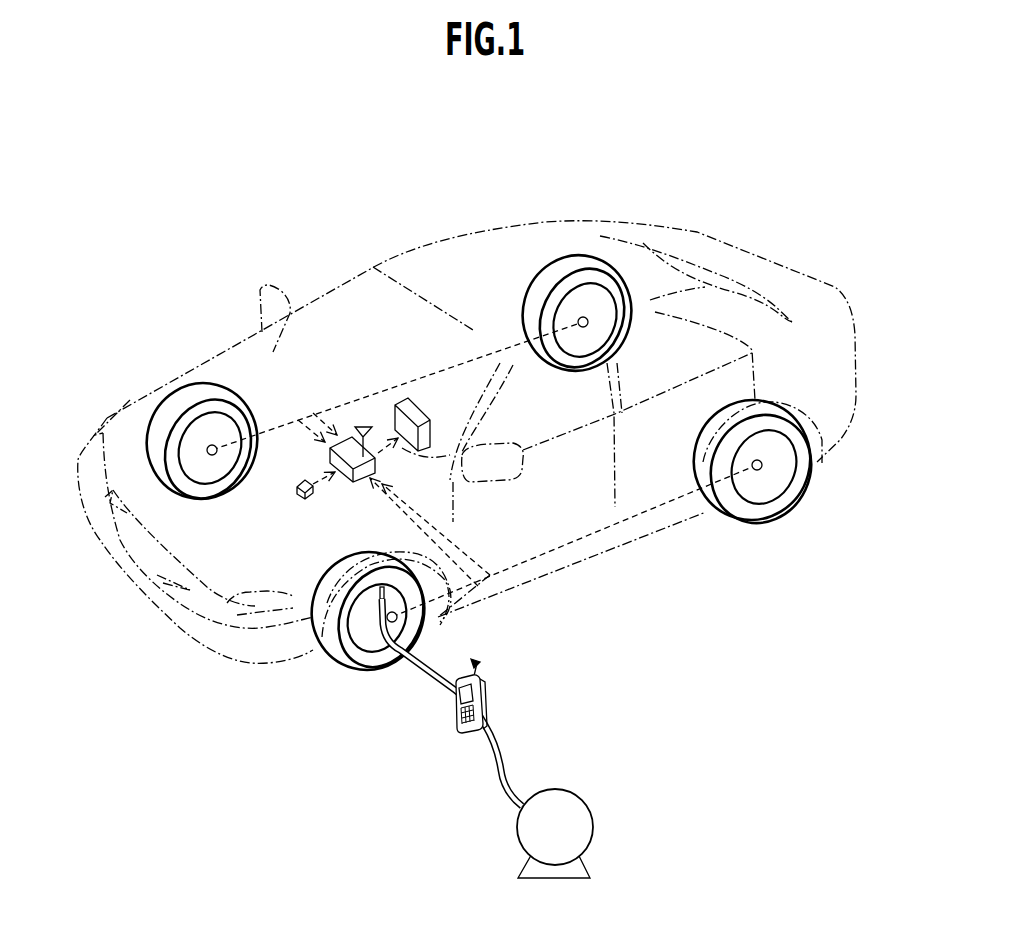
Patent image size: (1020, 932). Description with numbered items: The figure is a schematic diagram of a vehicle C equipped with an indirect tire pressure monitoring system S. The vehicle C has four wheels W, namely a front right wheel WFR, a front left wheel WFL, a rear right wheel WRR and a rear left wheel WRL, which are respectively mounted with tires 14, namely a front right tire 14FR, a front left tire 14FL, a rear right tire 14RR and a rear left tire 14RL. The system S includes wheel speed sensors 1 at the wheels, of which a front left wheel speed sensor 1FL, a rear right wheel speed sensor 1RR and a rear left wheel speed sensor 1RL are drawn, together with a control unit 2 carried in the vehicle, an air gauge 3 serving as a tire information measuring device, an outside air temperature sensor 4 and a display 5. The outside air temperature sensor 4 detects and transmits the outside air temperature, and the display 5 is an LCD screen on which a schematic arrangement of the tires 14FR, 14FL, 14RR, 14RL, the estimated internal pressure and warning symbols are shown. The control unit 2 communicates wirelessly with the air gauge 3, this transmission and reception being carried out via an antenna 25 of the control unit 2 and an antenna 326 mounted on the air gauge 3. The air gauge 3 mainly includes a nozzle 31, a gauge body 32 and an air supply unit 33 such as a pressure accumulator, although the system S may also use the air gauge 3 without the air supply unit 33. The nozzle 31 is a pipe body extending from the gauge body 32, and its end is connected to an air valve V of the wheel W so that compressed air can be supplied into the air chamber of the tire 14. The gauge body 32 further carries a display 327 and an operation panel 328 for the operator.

The vehicle C is at (410, 251).
The wheel speed sensors 1 is at (525, 457).
The front left wheel speed sensor 1FL is at (212, 445).
The rear right wheel speed sensor 1RR is at (556, 292).
The rear left wheel speed sensor 1RL is at (762, 466).
The wheels W is at (464, 455).
The front right wheel WFR is at (175, 430).
The rear right wheel WRR is at (630, 292).
The rear left wheel WRL is at (763, 500).
The front left wheel WFL is at (343, 645).
The tires 14 is at (479, 424).
The front right tire 14FR is at (198, 398).
The rear right tire 14RR is at (571, 270).
The rear left tire 14RL is at (737, 520).
The front left tire 14FL is at (330, 598).
The control unit 2 is at (350, 477).
The antenna 25 is at (366, 428).
The outside air temperature sensor 4 is at (302, 496).
The display 5 is at (415, 408).
The indirect tire pressure monitoring system S is at (313, 468).
The air valve V is at (380, 597).
The air gauge 3 is at (631, 645).
The nozzle 31 is at (432, 660).
The gauge body 32 is at (492, 712).
The air supply unit 33 is at (585, 793).
The antenna 326 is at (478, 668).
The display 327 is at (460, 703).
The operation panel 328 is at (460, 725).